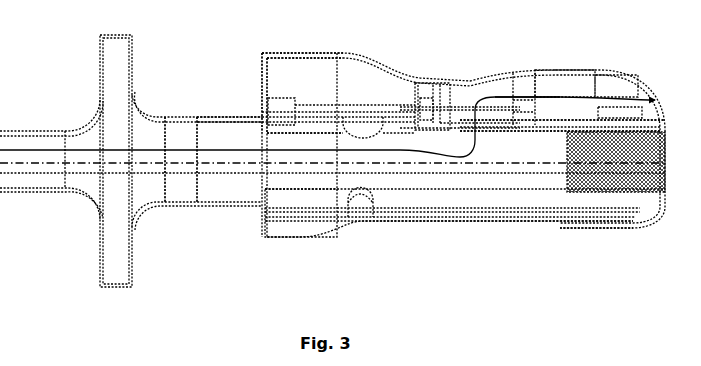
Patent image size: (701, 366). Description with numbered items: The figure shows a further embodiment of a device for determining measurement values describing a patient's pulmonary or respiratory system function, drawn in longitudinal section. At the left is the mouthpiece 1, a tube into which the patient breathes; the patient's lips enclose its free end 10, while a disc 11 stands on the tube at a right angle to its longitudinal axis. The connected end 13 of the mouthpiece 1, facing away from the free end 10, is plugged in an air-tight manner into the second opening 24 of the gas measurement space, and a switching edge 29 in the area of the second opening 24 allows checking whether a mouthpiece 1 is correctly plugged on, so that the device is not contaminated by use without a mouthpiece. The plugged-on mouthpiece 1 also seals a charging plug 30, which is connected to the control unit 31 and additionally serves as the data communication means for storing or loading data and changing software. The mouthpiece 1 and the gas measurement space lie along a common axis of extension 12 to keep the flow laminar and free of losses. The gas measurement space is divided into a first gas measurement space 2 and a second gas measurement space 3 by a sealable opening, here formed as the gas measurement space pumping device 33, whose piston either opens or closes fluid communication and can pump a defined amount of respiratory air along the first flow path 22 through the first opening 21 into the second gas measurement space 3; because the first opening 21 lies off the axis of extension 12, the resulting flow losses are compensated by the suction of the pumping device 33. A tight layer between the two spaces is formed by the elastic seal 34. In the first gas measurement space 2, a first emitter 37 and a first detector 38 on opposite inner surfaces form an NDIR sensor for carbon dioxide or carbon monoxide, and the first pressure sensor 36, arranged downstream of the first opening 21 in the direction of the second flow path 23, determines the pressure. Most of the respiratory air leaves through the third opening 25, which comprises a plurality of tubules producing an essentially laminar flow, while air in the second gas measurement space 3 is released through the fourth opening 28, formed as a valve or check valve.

The mouthpiece 1 is at (82, 95).
The free end of mouthpiece 10 is at (0, 214).
The disc 11 is at (118, 266).
The axis of extension 12 is at (503, 164).
The connected end of mouthpiece 13 is at (218, 117).
The first gas measurement space 2 is at (404, 184).
The second gas measurement space 3 is at (564, 93).
The first opening of gas measurement space 21 is at (470, 143).
The first flow path 22 is at (494, 95).
The second flow path 23 is at (193, 173).
The second opening of gas measurement space 24 is at (246, 209).
The third opening of gas measurement space 25 is at (633, 191).
The fourth opening 28 is at (645, 96).
The switching edge 29 is at (258, 108).
The charging plug 30 is at (260, 92).
The control unit 31 is at (343, 117).
The gas measurement space pumping device 33 is at (472, 108).
The seal 34 is at (513, 123).
The first pressure sensor 36 is at (548, 134).
The first emitter 37 is at (363, 193).
The first detector 38 is at (357, 128).